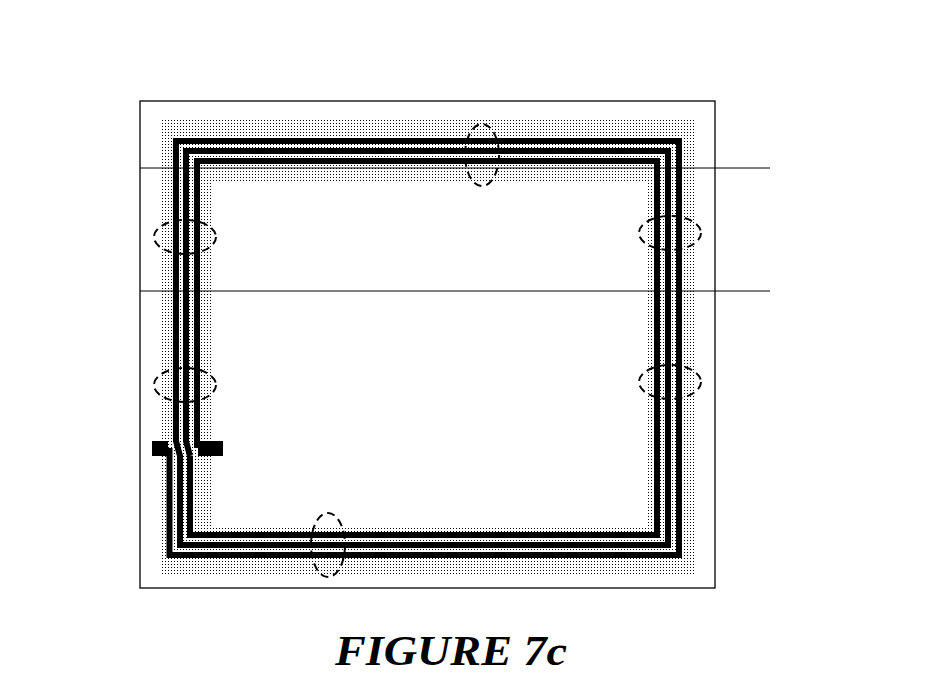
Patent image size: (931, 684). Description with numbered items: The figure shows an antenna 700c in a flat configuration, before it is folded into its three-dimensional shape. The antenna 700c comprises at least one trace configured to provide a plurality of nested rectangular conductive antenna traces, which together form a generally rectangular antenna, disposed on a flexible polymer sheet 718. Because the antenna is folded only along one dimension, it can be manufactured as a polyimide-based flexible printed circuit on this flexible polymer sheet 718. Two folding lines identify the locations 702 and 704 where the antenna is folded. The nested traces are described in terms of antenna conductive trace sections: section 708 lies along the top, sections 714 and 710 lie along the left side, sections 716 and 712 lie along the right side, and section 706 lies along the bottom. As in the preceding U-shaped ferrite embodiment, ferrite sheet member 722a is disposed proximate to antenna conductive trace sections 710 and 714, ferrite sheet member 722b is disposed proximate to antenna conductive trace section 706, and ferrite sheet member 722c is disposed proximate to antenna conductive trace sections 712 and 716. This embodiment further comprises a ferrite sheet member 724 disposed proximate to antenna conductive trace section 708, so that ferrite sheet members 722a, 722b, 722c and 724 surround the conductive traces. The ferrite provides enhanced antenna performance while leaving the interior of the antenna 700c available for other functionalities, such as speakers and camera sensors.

The antenna 700c is at (330, 75).
The folding line location 702 is at (770, 291).
The folding line location 704 is at (770, 168).
The antenna conductive trace section 706 is at (320, 572).
The antenna conductive trace section 708 is at (490, 130).
The antenna conductive trace section 710 is at (160, 377).
The antenna conductive trace section 712 is at (695, 390).
The antenna conductive trace section 714 is at (160, 233).
The antenna conductive trace section 716 is at (700, 225).
The flexible polymer sheet 718 is at (715, 530).
The ferrite sheet member 722a is at (208, 512).
The ferrite sheet member 722b is at (500, 527).
The ferrite sheet member 722c is at (645, 493).
The ferrite sheet member 724 is at (337, 182).